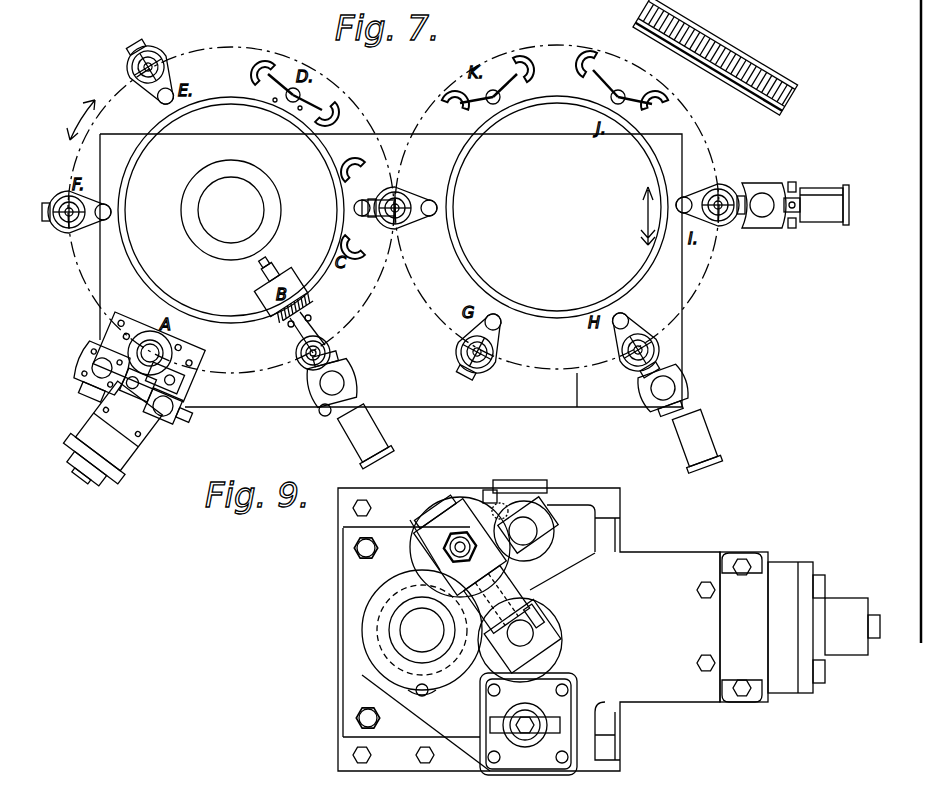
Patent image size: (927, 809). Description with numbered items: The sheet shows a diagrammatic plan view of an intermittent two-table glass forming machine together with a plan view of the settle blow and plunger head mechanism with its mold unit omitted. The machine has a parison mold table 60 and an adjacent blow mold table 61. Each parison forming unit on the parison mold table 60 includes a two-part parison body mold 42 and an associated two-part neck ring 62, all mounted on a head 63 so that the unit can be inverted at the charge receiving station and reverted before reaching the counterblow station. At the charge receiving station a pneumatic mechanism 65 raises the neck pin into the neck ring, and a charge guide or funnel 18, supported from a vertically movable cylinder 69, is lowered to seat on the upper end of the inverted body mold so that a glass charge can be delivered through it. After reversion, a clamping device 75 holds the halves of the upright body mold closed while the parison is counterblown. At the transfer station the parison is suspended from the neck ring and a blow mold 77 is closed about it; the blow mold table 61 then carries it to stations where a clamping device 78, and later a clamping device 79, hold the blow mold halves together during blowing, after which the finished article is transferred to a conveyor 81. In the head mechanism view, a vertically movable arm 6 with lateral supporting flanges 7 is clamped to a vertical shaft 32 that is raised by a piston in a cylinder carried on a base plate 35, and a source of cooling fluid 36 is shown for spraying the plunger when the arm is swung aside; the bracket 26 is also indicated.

In FIG. 7, the vertically movable arm 6 is at (147, 400).
In FIG. 9, the vertically movable arm 6 is at (520, 583).
In FIG. 9, the lateral supporting flanges 7 is at (478, 520).
In FIG. 7, the charge guide or funnel 18 is at (145, 350).
In FIG. 9, the charge guide or funnel 18 is at (372, 632).
In FIG. 9, the bracket 26 is at (432, 546).
In FIG. 9, the vertical shaft 32 is at (548, 622).
In FIG. 9, the base or supporting plate 35 is at (390, 728).
In FIG. 9, the source of cooling fluid 36 is at (516, 510).
In FIG. 7, the parison body mold 42 is at (350, 182).
In FIG. 7, the parison mold table 60 is at (85, 290).
In FIG. 7, the blow mold table 61 is at (577, 407).
In FIG. 7, the neck ring or neck forming mold 62 is at (318, 345).
In FIG. 7, the head 63 is at (262, 295).
In FIG. 9, the pneumatic mechanism 65 is at (580, 690).
In FIG. 7, the vertically movable cylinder 69 is at (90, 366).
In FIG. 7, the clamping device 75 is at (352, 382).
In FIG. 7, the blow mold 77 is at (632, 82).
In FIG. 7, the clamping device 78 is at (680, 378).
In FIG. 7, the clamping device 79 is at (762, 188).
In FIG. 7, the conveyor 81 is at (745, 58).